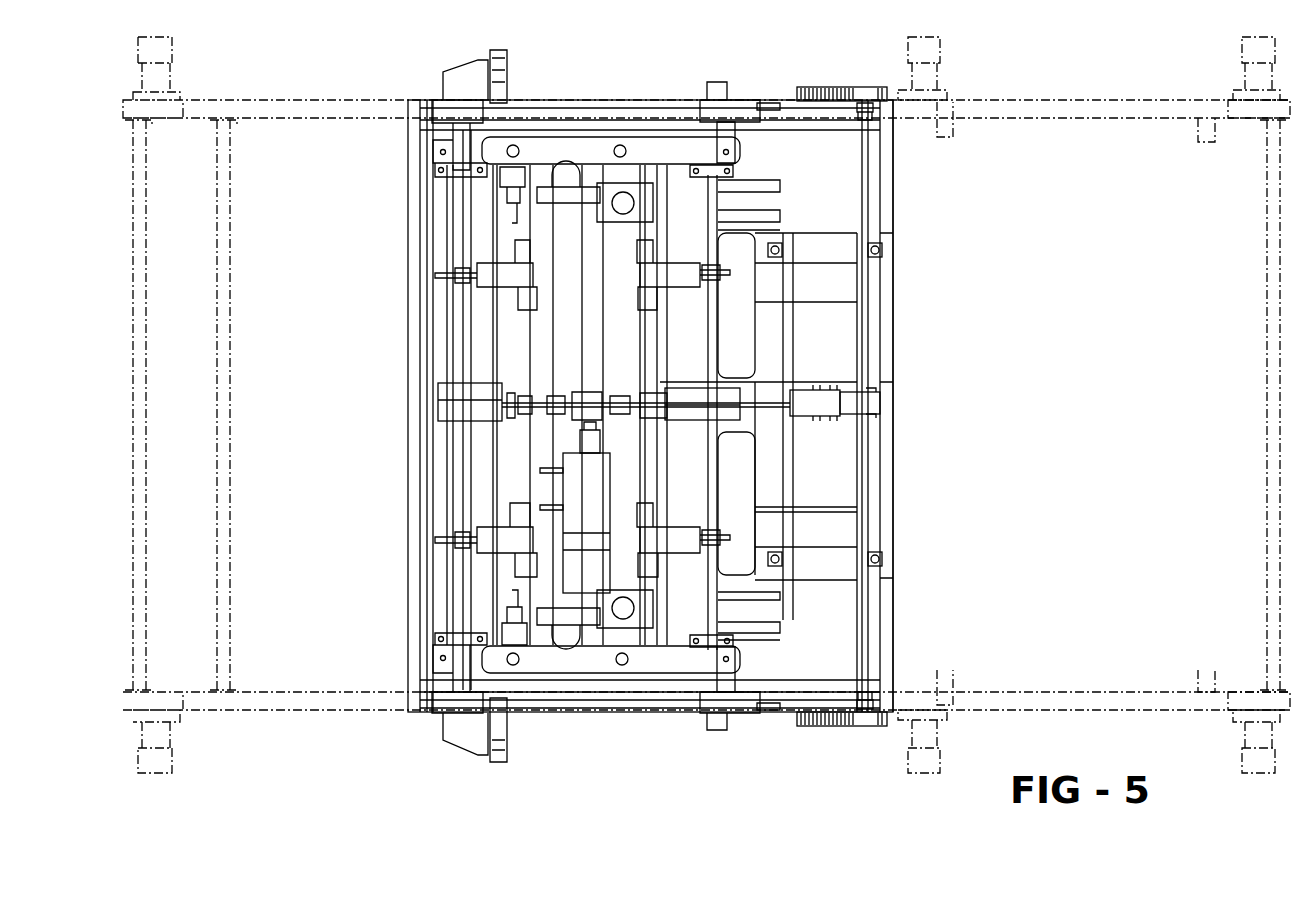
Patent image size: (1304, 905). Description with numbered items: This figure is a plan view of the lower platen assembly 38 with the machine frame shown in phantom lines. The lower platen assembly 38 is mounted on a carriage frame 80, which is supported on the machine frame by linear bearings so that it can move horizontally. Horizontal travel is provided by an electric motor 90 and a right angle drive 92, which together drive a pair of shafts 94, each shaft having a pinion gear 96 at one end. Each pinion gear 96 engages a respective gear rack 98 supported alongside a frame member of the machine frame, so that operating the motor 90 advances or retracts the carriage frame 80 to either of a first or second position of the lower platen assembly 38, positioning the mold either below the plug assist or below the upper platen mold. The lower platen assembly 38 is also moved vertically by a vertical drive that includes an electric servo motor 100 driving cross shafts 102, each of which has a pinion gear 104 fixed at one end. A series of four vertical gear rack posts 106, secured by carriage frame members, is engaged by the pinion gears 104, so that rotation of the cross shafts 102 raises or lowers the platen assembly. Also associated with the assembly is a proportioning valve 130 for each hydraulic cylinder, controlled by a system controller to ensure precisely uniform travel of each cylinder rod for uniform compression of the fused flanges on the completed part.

The lower platen assembly 38 is at (574, 716).
The carriage frame 80 is at (402, 386).
The electric motor 90 is at (833, 385).
The right angle drive 92 is at (877, 408).
The shafts 94 is at (868, 206).
The pinion gear 96 is at (865, 92).
The gear rack 98 is at (810, 94).
The electric servo motor 100 is at (568, 493).
The cross shafts 102 is at (458, 246).
The pinion gear 104 is at (480, 140).
The vertical gear rack posts 106 is at (445, 148).
The proportioning valve 130 is at (548, 170).